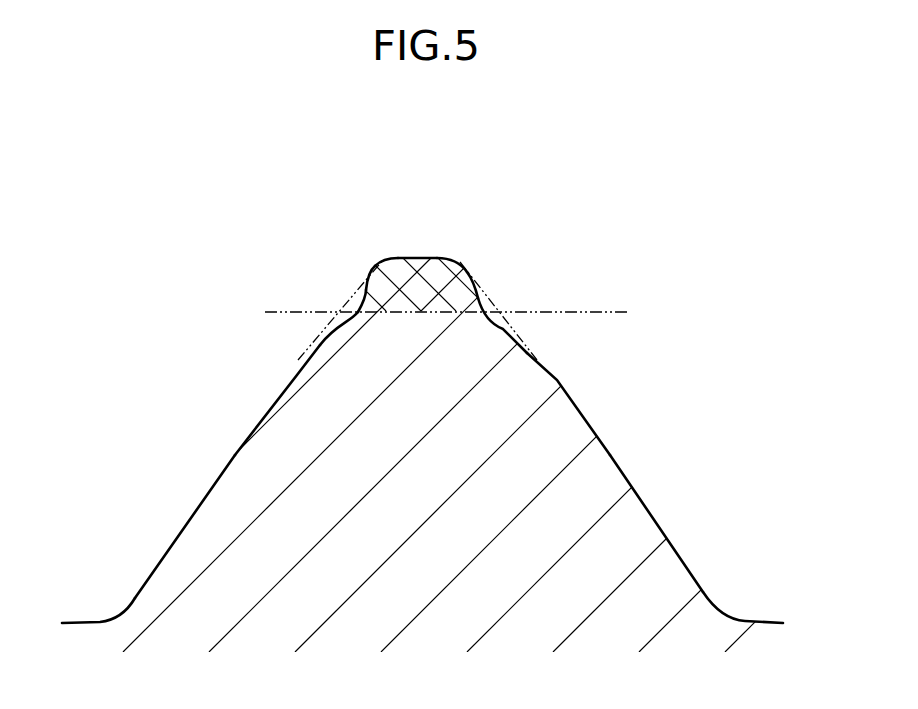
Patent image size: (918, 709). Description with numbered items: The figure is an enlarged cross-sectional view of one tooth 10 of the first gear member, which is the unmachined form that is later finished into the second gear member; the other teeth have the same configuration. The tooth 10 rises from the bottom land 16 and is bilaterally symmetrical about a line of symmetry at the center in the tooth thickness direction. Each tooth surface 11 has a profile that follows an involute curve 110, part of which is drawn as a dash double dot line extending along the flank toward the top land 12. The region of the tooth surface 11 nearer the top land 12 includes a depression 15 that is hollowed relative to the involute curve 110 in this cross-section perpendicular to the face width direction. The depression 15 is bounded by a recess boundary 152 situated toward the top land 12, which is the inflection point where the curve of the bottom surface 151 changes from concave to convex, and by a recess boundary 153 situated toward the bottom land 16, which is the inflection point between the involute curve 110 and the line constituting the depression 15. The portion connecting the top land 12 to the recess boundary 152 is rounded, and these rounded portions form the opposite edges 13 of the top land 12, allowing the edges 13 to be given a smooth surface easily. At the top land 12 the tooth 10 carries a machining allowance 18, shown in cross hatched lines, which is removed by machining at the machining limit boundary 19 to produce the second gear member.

The tooth 10 is at (590, 410).
The tooth surface 11 is at (233, 457).
The top land 12 is at (421, 258).
The edges 13 is at (378, 260).
The depression 15 is at (340, 322).
The bottom land 16 is at (73, 623).
The machining allowance 18 is at (470, 268).
The machining limit boundary 19 is at (587, 312).
The involute curve 110 is at (358, 290).
The bottom surface 151 is at (355, 300).
The recess boundary 152 is at (362, 293).
The recess boundary 153 is at (290, 385).